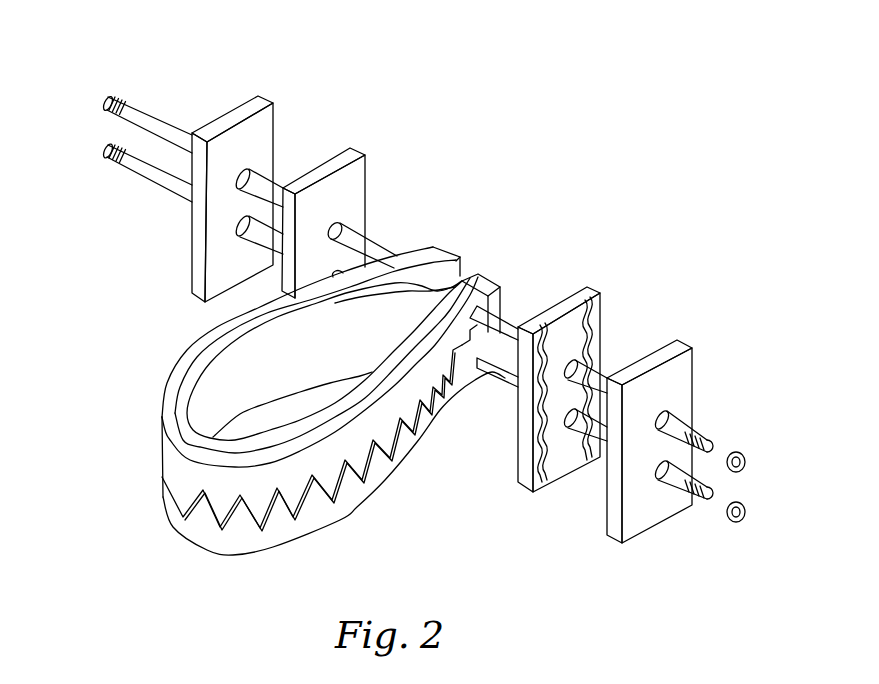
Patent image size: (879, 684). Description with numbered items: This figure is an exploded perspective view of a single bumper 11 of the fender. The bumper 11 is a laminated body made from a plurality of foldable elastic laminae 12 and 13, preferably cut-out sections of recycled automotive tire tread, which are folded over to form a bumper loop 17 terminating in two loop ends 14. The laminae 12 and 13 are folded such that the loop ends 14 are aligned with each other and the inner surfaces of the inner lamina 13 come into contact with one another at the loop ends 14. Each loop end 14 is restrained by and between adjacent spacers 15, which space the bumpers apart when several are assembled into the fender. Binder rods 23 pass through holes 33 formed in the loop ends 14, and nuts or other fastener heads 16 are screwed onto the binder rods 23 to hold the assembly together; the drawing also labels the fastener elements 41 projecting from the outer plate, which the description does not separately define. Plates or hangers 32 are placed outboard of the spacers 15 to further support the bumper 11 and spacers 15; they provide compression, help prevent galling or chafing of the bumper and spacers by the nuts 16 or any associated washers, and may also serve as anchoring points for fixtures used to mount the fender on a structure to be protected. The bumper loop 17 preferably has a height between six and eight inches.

The bumper 11 is at (127, 572).
The foldable elastic lamina 12 is at (183, 362).
The foldable elastic lamina 13 is at (362, 385).
The loop end 14 is at (443, 250).
The spacer 15 is at (367, 176).
The nut 16 is at (745, 510).
The bumper loop 17 is at (400, 515).
The binder rod 23 is at (108, 150).
The plate 32 is at (264, 98).
The hole 33 is at (440, 287).
The bolt 41 is at (658, 420).